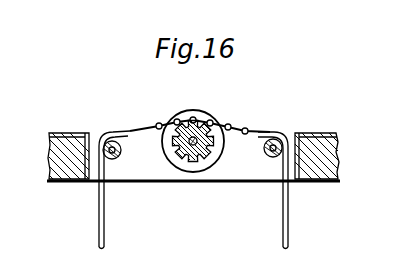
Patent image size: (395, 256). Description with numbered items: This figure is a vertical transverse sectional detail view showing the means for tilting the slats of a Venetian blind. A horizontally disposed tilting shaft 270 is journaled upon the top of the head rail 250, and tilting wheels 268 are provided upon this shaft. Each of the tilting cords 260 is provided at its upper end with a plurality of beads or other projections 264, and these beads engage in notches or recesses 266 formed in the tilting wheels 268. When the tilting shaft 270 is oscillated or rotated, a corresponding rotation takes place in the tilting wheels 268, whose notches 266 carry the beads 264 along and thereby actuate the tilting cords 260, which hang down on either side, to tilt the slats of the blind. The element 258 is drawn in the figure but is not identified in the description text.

The head rail 250 is at (318, 178).
The strap 258 is at (93, 132).
The tilting cords 260 is at (104, 210).
The beads 264 is at (227, 127).
The notches 266 is at (214, 156).
The tilting wheels 268 is at (176, 150).
The tilting shaft 270 is at (191, 117).